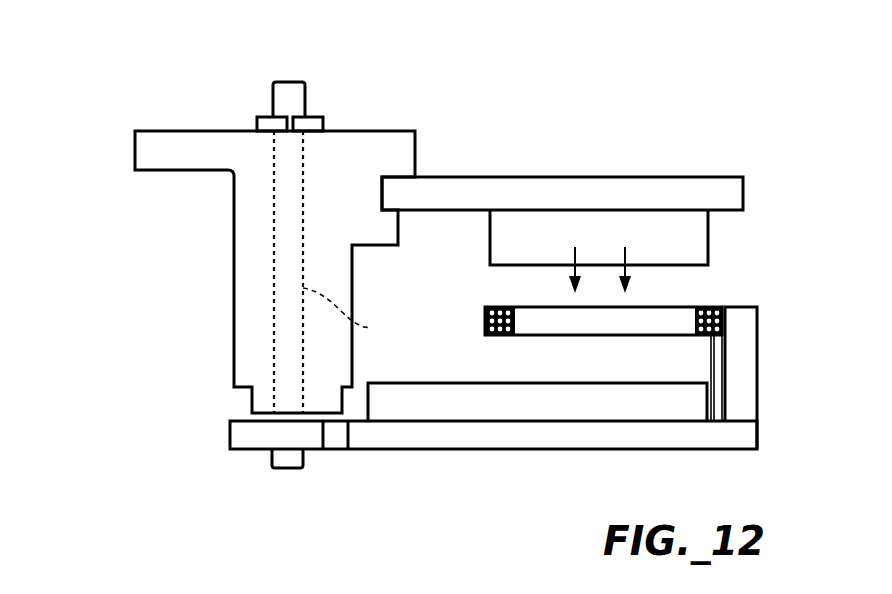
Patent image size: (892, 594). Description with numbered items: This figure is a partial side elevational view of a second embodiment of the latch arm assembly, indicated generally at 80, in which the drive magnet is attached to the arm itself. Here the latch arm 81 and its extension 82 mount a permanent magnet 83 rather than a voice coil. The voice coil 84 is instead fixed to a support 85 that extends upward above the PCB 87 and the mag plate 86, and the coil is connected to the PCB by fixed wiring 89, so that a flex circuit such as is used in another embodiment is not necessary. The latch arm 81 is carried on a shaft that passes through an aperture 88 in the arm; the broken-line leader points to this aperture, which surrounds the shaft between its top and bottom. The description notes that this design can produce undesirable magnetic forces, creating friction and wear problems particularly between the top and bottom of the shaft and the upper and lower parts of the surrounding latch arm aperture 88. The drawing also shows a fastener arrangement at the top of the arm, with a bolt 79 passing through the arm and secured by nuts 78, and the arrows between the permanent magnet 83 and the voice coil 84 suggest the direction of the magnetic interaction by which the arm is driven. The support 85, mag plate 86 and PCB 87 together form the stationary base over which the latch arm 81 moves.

The print head assembly 80 is at (172, 82).
The nuts 78 is at (262, 116).
The bolt 79 is at (300, 92).
The latch arm 81 is at (343, 130).
The extension 82 is at (472, 185).
The permanent magnet 83 is at (700, 252).
The voice coil 84 is at (710, 307).
The support 85 is at (757, 350).
The mag plate 86 is at (647, 412).
The PCB 87 is at (520, 450).
The aperture 88 is at (353, 315).
The fixed wiring 89 is at (718, 377).